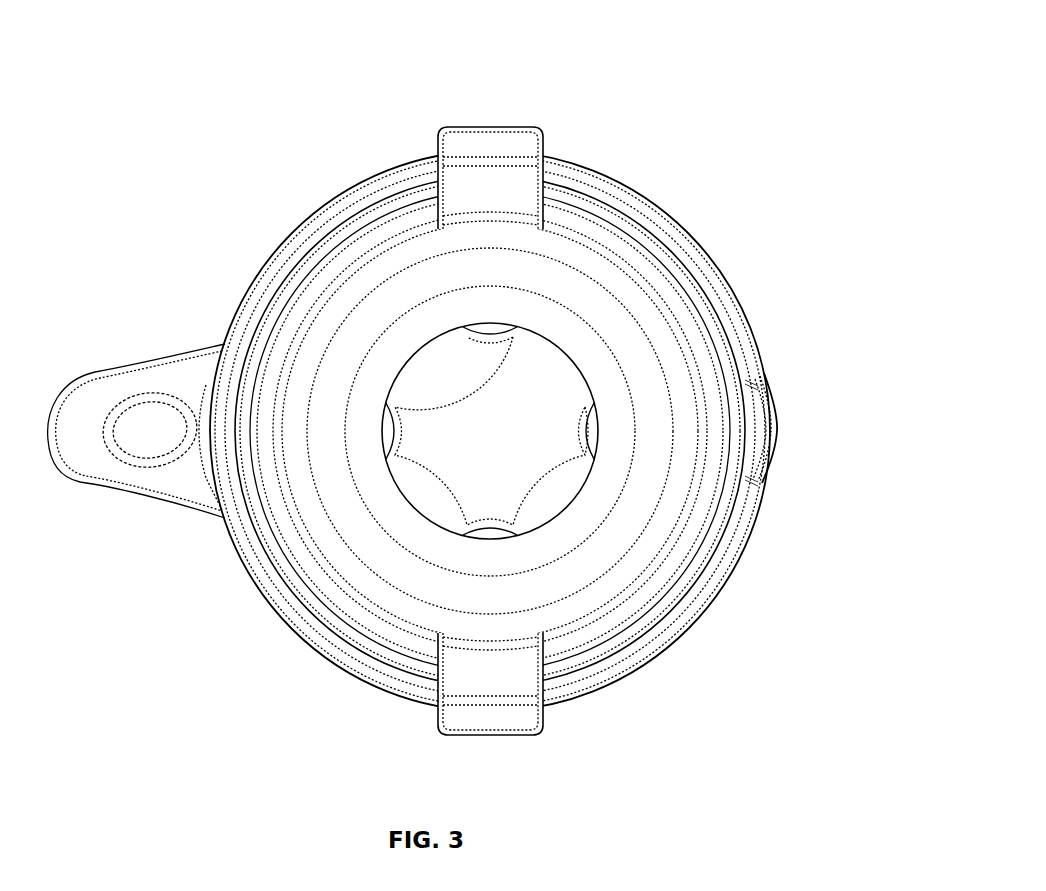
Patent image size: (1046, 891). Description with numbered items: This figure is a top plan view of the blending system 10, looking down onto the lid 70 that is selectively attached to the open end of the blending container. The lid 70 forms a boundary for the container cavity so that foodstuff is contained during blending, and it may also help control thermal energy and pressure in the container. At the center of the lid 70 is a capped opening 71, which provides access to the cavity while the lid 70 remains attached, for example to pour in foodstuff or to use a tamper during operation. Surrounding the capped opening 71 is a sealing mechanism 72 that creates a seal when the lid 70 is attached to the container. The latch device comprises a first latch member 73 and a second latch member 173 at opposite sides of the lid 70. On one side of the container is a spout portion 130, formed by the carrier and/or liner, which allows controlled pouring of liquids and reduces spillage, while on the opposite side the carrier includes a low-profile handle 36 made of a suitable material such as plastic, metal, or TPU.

The blending system 10 is at (651, 90).
The handle 36 is at (168, 473).
The lid 70 is at (639, 587).
The capped opening 71 is at (601, 437).
The sealing mechanism 72 is at (672, 265).
The first latch member 73 is at (517, 153).
The spout portion 130 is at (774, 428).
The second latch member 173 is at (490, 722).